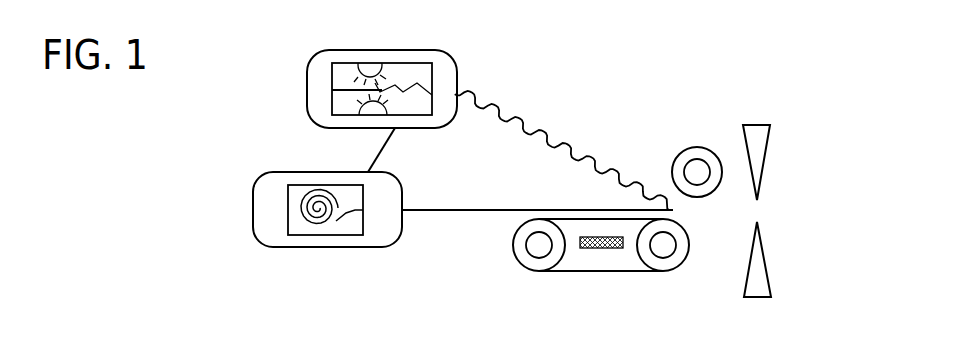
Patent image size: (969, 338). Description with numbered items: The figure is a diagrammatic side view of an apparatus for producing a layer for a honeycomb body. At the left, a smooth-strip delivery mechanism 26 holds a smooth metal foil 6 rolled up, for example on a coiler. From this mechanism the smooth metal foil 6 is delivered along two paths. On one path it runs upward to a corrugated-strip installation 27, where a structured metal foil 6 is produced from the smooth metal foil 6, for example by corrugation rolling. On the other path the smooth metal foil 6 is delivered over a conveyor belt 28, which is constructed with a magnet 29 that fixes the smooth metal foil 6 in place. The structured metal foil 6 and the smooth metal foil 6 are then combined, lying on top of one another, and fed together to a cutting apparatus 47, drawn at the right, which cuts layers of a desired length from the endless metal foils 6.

The corrugated-strip installation 27 is at (307, 102).
The smooth-strip delivery mechanism 26 is at (250, 223).
The metal foil 6 is at (540, 123).
The conveyor belt 28 is at (675, 258).
The magnet 29 is at (590, 250).
The cutting apparatus 47 is at (765, 163).